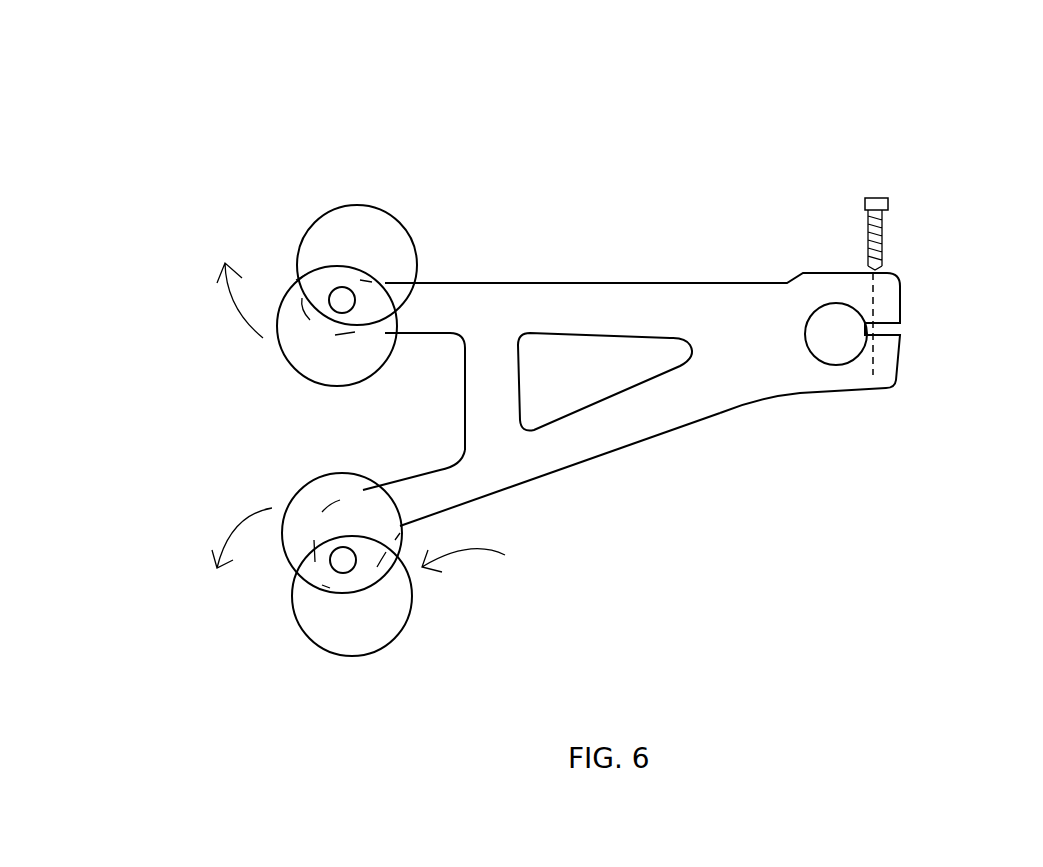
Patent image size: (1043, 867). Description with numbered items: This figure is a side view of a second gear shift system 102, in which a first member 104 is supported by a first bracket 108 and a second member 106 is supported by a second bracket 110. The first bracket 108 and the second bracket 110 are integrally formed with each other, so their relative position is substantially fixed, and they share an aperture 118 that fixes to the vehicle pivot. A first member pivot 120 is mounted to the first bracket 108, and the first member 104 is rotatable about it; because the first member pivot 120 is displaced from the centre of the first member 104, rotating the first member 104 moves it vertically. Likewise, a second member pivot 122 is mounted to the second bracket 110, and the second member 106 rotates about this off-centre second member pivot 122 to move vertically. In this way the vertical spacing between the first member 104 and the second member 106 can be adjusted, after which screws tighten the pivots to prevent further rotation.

The second gear shift system 102 is at (815, 510).
The first member 104 is at (329, 627).
The second member 106 is at (249, 213).
The first bracket 108 is at (567, 455).
The second bracket 110 is at (612, 308).
The aperture 118 is at (830, 333).
The first member pivot 120 is at (350, 570).
The second member pivot 122 is at (342, 300).